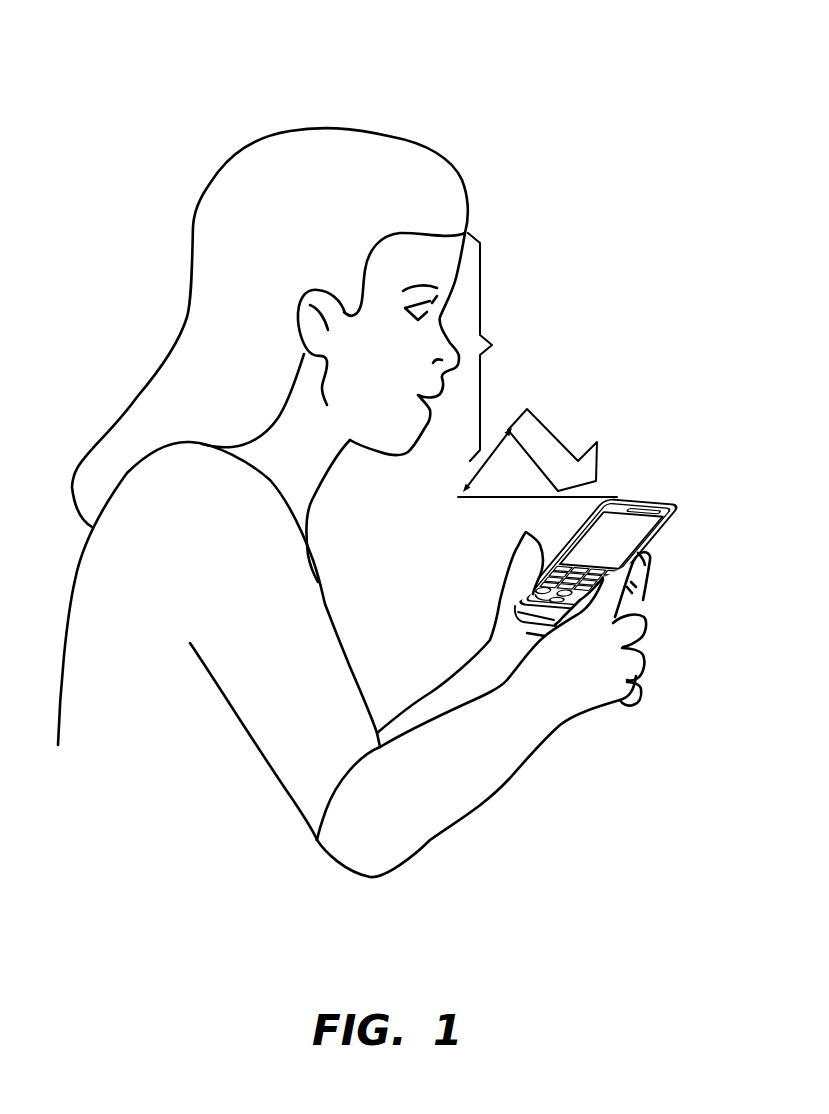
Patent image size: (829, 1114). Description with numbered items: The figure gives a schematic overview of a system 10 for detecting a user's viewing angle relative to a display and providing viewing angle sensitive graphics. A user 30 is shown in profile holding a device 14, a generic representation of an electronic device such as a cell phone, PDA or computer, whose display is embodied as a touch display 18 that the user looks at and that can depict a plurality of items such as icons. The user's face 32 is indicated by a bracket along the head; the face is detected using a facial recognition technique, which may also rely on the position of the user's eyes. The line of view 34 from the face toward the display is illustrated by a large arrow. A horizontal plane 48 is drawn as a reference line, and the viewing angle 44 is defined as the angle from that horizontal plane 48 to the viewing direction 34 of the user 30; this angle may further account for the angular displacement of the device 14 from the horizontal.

The system 10 is at (347, 502).
The device 14 is at (668, 545).
The touch display 18 is at (632, 533).
The user 30 is at (258, 135).
The user's face 32 is at (498, 347).
The line of view 34 is at (572, 443).
The viewing angle 44 is at (488, 467).
The horizontal plane 48 is at (505, 497).